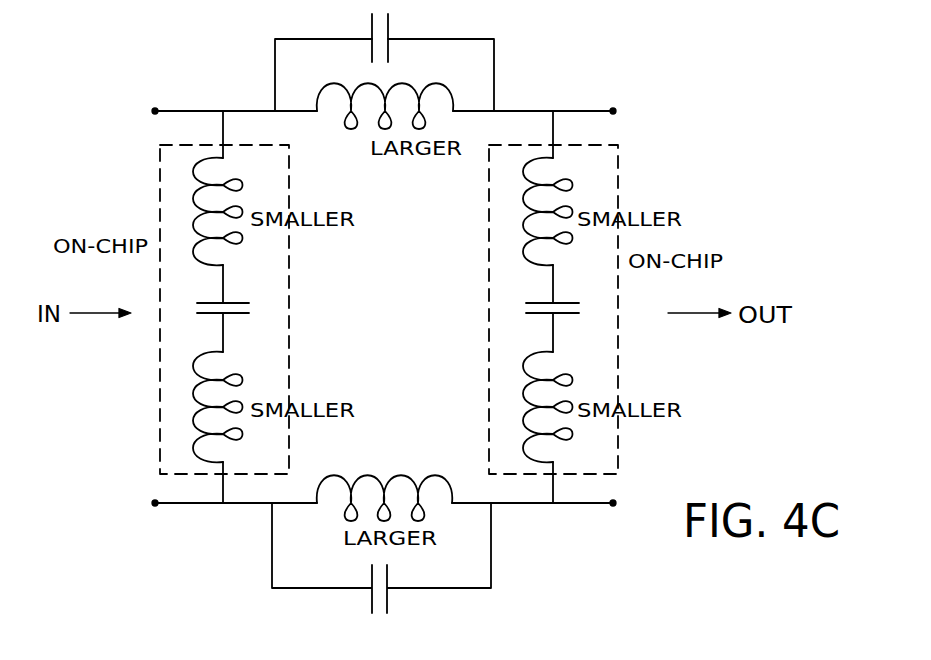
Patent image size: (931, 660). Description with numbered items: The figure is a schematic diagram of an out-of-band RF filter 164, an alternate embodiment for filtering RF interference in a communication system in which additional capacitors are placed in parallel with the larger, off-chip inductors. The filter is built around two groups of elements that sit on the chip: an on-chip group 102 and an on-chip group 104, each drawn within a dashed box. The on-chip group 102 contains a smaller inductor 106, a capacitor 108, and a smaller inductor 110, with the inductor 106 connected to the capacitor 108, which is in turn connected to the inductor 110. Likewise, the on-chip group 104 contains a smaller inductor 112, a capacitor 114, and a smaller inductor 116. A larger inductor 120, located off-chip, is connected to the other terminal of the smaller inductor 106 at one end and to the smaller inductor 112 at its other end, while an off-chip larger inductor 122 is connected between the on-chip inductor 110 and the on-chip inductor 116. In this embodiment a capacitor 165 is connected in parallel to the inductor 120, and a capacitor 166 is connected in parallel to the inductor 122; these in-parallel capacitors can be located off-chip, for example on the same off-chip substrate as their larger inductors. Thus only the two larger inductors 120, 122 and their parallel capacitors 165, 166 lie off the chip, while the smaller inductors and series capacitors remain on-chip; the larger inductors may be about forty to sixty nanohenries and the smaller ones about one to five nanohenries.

The on-chip group of elements 102 is at (138, 148).
The on-chip group of elements 104 is at (637, 140).
The smaller inductor 106 is at (198, 222).
The capacitor 108 is at (242, 314).
The smaller inductor 110 is at (198, 418).
The smaller inductor 112 is at (528, 222).
The capacitor 114 is at (542, 314).
The smaller inductor 116 is at (527, 420).
The larger inductor 120 is at (352, 129).
The larger inductor 122 is at (378, 475).
The filter 164 is at (605, 58).
The capacitor 165 is at (371, 31).
The capacitor 166 is at (387, 598).